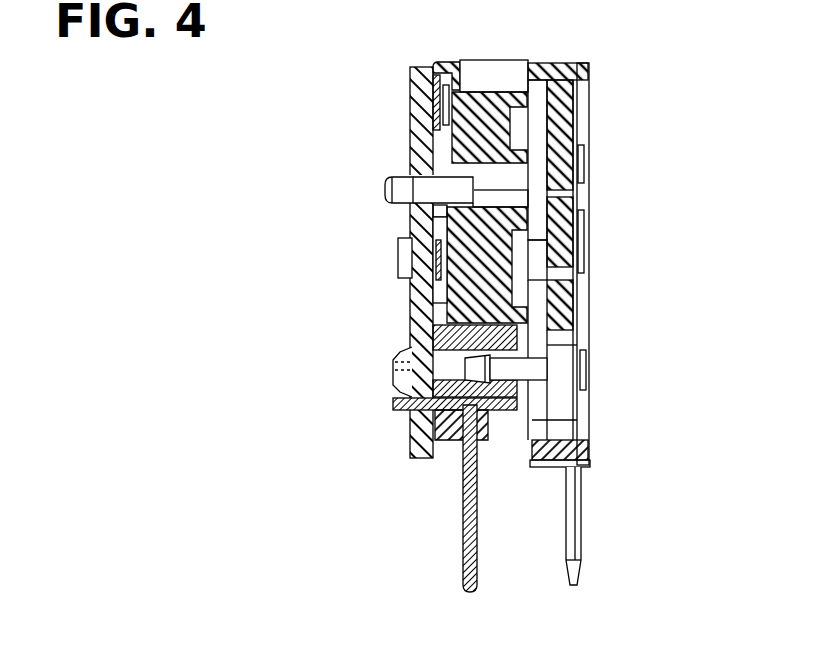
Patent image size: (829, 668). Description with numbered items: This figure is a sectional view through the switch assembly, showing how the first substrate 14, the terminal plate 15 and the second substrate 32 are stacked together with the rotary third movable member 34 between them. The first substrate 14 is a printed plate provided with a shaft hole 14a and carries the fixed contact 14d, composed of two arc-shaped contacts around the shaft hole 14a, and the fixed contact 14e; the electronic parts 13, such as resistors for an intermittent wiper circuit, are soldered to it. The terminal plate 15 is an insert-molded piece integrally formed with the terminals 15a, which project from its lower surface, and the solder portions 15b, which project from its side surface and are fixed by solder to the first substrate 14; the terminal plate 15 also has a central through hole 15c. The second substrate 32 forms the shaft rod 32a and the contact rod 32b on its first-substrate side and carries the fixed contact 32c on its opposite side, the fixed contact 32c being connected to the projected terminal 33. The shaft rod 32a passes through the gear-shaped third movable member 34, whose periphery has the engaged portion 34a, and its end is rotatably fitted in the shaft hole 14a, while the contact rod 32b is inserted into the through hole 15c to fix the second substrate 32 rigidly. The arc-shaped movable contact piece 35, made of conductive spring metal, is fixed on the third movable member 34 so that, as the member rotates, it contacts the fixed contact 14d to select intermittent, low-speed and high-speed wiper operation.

The electronic parts 13 is at (402, 260).
The first substrate 14 is at (413, 322).
The shaft hole 14a is at (413, 197).
The fixed contact 14d is at (413, 112).
The fixed contact 14e is at (413, 290).
The terminal plate 15 is at (445, 440).
The terminals 15a is at (463, 540).
The solder portions 15b is at (395, 410).
The through hole 15c is at (400, 372).
The second substrate 32 is at (582, 352).
The shaft rod 32a is at (398, 180).
The contact rod 32b is at (480, 375).
The fixed contact 32c is at (580, 318).
The projected terminal 33 is at (581, 537).
The third movable member 34 is at (573, 120).
The engaged portion 34a is at (508, 70).
The movable contact piece 35 is at (410, 82).